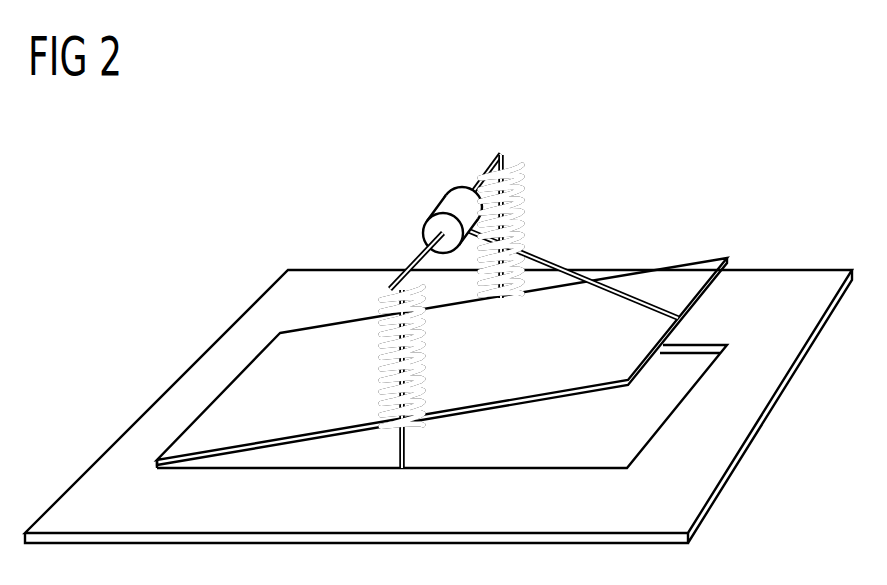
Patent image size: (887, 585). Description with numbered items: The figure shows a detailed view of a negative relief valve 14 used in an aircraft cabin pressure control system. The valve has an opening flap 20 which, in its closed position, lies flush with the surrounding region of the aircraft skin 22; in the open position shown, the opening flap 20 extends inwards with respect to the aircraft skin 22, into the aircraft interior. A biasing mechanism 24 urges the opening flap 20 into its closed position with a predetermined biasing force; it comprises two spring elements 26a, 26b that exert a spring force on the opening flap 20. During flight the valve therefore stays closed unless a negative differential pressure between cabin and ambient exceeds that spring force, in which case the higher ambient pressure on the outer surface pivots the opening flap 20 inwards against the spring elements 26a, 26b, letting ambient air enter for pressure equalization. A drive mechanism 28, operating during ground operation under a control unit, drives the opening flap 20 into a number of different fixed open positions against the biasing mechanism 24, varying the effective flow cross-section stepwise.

The negative relief valve 14 is at (683, 100).
The opening flap 20 is at (679, 282).
The aircraft skin 22 is at (758, 399).
The biasing mechanism 24 is at (540, 146).
The spring element 26a is at (386, 289).
The spring element 26b is at (522, 166).
The drive mechanism 28 is at (447, 205).